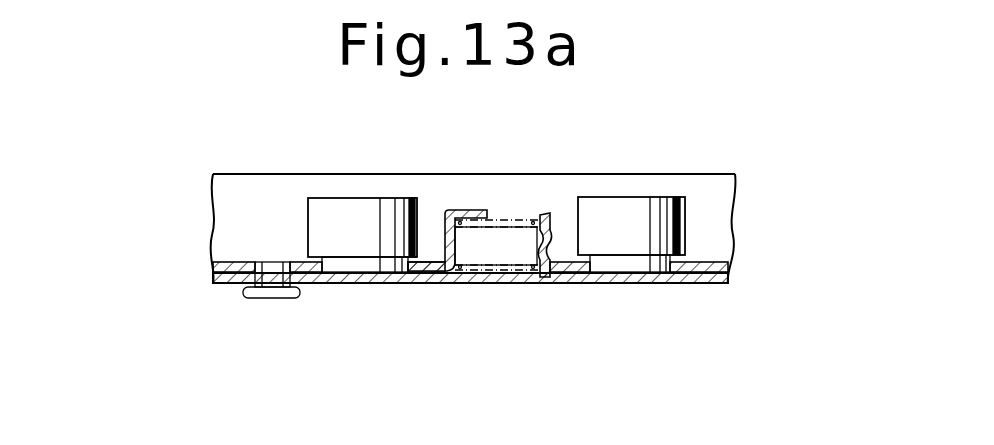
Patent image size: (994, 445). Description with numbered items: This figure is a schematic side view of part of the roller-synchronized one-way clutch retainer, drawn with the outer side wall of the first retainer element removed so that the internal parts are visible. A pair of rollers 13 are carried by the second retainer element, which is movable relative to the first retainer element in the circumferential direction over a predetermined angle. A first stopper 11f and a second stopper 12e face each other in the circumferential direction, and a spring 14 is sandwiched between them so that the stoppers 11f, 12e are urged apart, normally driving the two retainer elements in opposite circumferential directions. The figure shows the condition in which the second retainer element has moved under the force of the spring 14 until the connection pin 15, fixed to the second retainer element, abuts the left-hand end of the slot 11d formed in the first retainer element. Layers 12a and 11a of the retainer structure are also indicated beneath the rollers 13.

The roller 13 is at (348, 207).
The second stopper 12e is at (462, 212).
The spring 14 is at (540, 215).
The first stopper 11f is at (545, 214).
The upper layer of circuit board 12a is at (213, 266).
The lower substrate layer 11a is at (213, 277).
The connection pin 15 is at (255, 298).
The slot 11d is at (340, 285).